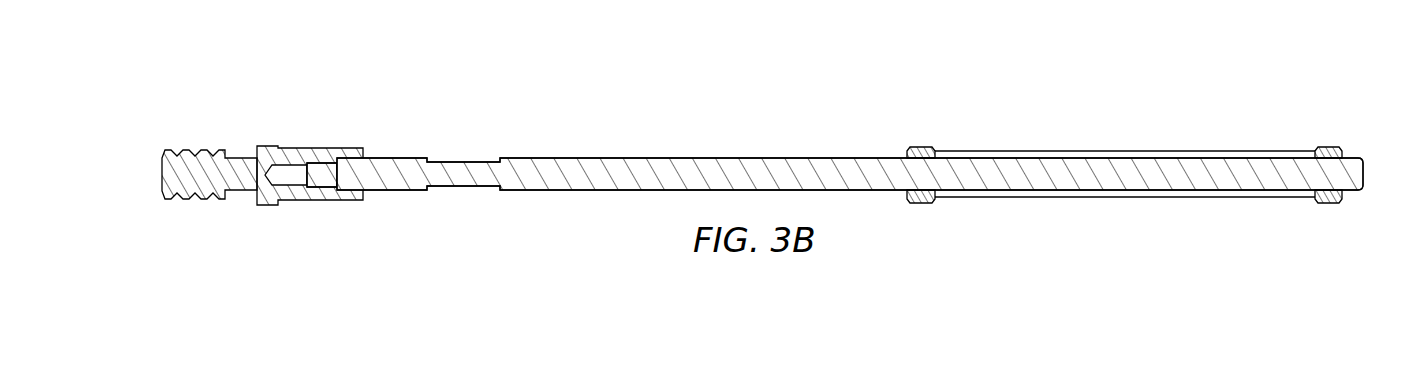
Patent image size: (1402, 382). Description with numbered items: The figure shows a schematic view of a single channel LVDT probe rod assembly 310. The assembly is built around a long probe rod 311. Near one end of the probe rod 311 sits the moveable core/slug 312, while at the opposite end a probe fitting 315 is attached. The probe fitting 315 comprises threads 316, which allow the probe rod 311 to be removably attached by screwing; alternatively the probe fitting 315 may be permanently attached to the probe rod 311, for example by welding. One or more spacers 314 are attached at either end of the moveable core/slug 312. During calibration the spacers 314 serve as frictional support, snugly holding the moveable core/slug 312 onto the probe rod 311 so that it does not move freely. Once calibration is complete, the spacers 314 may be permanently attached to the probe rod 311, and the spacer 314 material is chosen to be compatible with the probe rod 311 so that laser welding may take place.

The probe rod assembly 310 is at (755, 173).
The probe rod 311 is at (668, 172).
The moveable core/slug 312 is at (1128, 150).
The spacer 314 is at (912, 147).
The probe fitting 315 is at (214, 192).
The threads 316 is at (320, 180).